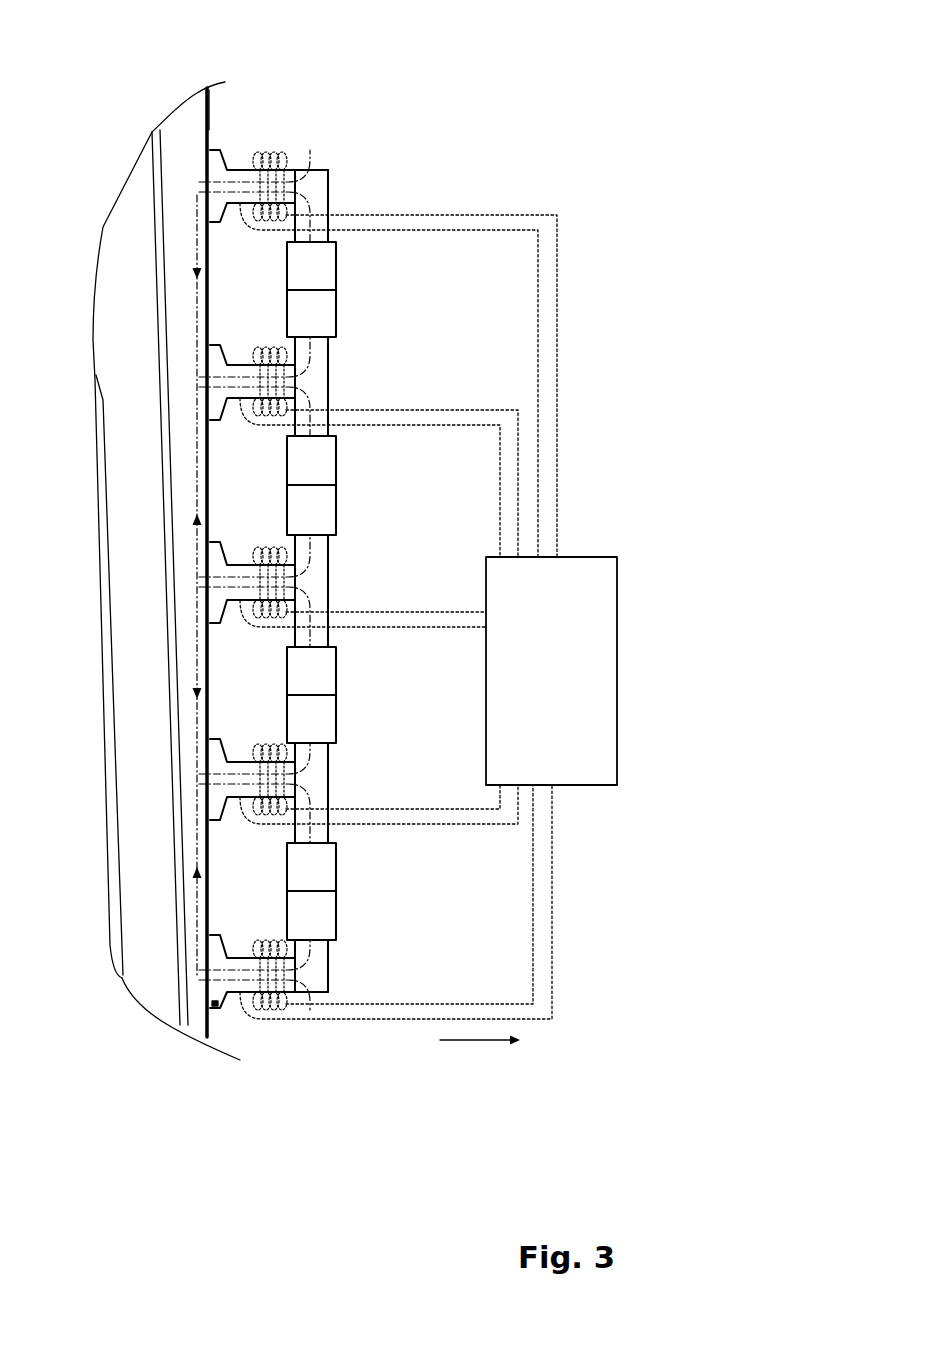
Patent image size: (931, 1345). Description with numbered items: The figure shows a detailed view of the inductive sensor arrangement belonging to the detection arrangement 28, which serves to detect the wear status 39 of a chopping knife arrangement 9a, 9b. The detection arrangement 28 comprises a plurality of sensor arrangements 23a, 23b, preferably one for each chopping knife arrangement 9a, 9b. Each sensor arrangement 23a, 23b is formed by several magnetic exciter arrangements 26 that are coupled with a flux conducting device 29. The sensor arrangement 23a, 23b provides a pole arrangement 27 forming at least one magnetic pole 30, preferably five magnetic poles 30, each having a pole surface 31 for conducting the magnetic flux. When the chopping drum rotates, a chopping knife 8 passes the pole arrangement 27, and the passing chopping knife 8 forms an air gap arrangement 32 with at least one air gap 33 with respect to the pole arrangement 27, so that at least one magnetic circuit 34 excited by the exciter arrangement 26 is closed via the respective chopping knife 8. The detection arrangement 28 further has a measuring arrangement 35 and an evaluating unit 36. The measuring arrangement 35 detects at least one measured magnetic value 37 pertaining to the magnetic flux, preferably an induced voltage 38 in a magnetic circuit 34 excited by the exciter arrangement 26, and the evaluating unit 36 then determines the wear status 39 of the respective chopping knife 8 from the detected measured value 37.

The detection arrangement 28 is at (125, 118).
The chopping knife 8 is at (180, 127).
The wear status 39 is at (214, 97).
The chopping knife arrangement 9a is at (120, 607).
The chopping knife arrangement 9b is at (163, 996).
The sensor arrangement 23a is at (323, 118).
The sensor arrangement 23b is at (381, 591).
The flux conducting device 29 is at (332, 165).
The air gap 33 is at (213, 137).
The magnetic pole 30 is at (222, 172).
The magnetic exciter arrangement 26 is at (336, 298).
The magnetic circuit 34 is at (334, 352).
The evaluating unit 36 is at (567, 685).
The pole surface 31 is at (218, 1004).
The air gap arrangement 32 is at (207, 1052).
The pole arrangement 27 is at (250, 1052).
The measuring arrangement 35 is at (275, 1052).
The measured magnetic value 37 is at (498, 1079).
The induced voltage 38 is at (466, 1045).